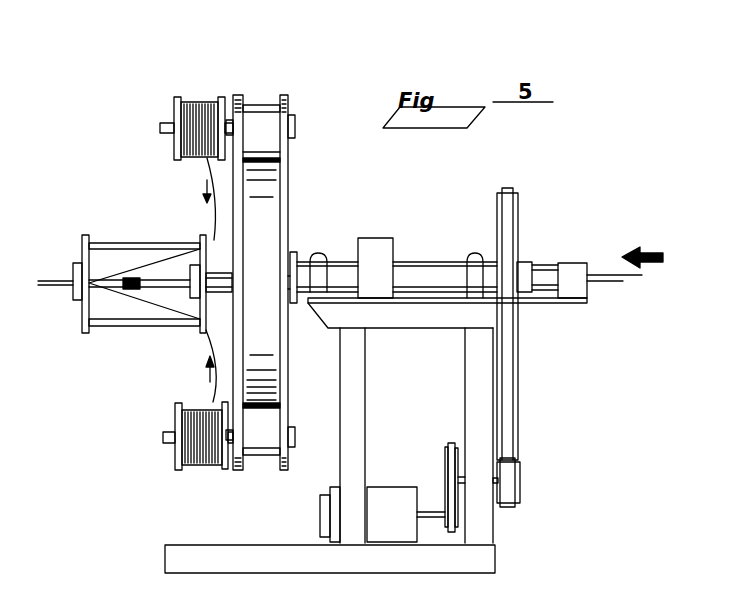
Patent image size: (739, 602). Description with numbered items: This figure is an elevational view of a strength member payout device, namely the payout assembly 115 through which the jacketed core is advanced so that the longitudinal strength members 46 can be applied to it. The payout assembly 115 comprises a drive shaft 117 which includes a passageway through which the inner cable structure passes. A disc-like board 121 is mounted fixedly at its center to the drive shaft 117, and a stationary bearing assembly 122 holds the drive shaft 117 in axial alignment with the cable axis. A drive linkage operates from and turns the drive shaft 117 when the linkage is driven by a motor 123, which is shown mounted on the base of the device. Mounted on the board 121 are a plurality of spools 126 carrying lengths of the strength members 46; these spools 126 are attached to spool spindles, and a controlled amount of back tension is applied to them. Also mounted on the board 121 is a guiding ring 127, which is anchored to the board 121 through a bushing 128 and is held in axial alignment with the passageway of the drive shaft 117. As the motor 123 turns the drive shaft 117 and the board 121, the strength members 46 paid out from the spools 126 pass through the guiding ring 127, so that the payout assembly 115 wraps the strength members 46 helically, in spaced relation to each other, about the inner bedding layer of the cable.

The longitudinal strength members 46 is at (158, 303).
The payout assembly 115 is at (388, 188).
The drive shaft 117 is at (410, 262).
The disc-like board 121 is at (283, 185).
The stationary bearing assembly 122 is at (297, 250).
The motor 123 is at (397, 487).
The spools 126 is at (220, 103).
The guiding ring 127 is at (205, 237).
The bushing 128 is at (205, 332).